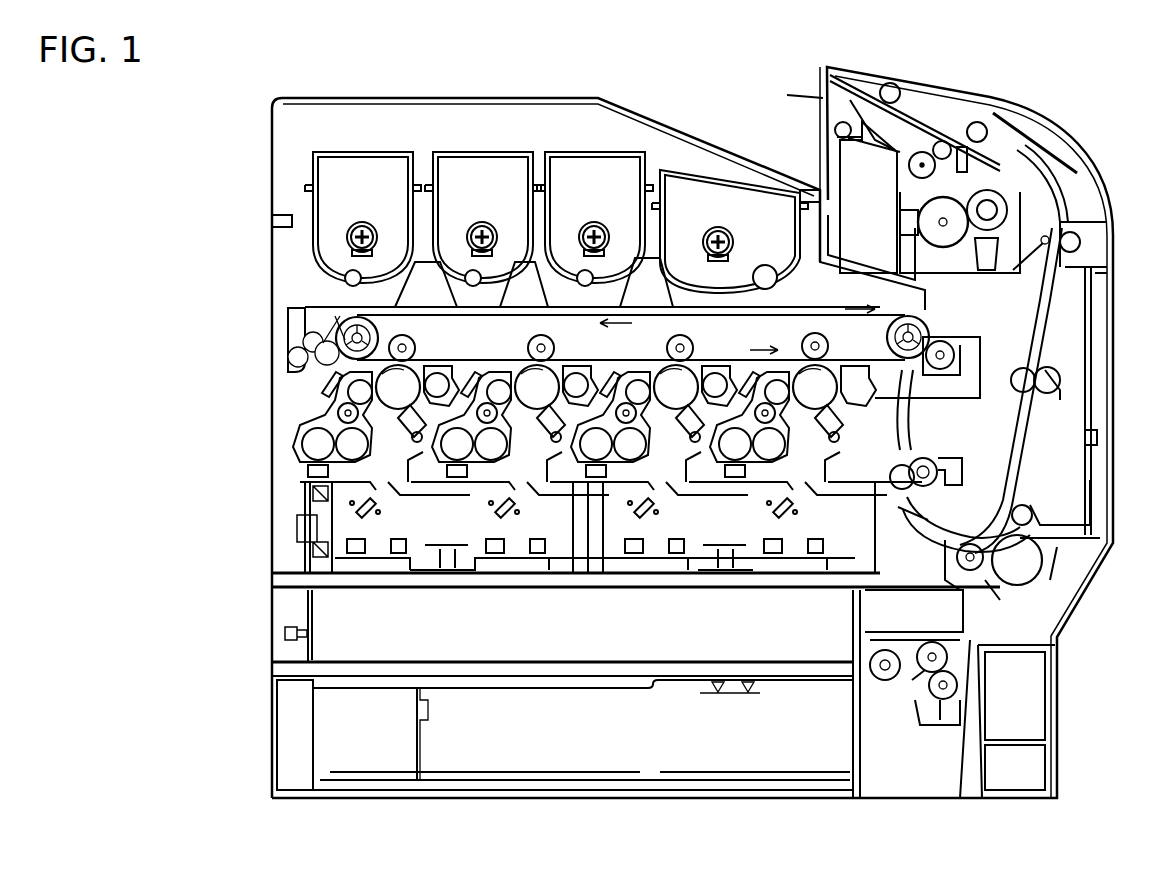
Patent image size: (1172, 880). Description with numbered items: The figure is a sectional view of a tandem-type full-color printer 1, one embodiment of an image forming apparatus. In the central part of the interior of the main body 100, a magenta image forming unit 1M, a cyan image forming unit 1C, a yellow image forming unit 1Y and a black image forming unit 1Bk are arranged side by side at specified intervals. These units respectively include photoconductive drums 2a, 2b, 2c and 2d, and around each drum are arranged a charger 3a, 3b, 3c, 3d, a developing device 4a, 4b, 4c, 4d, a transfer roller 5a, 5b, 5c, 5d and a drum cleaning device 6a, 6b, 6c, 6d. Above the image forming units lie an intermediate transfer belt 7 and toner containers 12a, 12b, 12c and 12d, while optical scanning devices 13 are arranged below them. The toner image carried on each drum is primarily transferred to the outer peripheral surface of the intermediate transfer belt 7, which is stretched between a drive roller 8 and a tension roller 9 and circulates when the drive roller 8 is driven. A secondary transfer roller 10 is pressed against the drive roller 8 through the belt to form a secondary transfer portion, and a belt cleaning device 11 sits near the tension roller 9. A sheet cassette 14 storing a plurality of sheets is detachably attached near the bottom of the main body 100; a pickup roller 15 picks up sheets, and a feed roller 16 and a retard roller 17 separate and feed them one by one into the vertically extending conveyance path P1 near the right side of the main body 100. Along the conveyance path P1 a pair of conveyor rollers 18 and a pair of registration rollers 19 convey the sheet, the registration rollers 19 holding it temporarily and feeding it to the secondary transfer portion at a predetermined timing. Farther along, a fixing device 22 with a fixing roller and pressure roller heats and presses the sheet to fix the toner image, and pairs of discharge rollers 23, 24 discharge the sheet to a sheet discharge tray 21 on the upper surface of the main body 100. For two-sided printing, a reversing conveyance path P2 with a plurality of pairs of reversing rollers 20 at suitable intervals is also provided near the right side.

The full-color printer 1 is at (300, 88).
The main body 100 is at (272, 262).
The magenta image forming unit 1M is at (392, 428).
The cyan image forming unit 1C is at (538, 424).
The yellow image forming unit 1Y is at (677, 445).
The black image forming unit 1Bk is at (816, 443).
The photoconductive drum 2a is at (412, 362).
The photoconductive drum 2b is at (556, 365).
The photoconductive drum 2c is at (690, 365).
The photoconductive drum 2d is at (827, 365).
The charger 3a is at (391, 487).
The charger 3b is at (519, 433).
The charger 3c is at (658, 433).
The charger 3d is at (797, 430).
The developing device 4a is at (322, 416).
The developing device 4b is at (474, 462).
The developing device 4c is at (613, 479).
The developing device 4d is at (752, 460).
The transfer roller 5a is at (406, 334).
The transfer roller 5b is at (539, 319).
The transfer roller 5c is at (663, 341).
The transfer roller 5d is at (798, 338).
The drum cleaning device 6a is at (450, 372).
The drum cleaning device 6b is at (595, 366).
The drum cleaning device 6c is at (731, 360).
The drum cleaning device 6d is at (878, 318).
The intermediate transfer belt 7 is at (808, 306).
The drive roller 8 is at (918, 324).
The tension roller 9 is at (340, 318).
The secondary transfer roller 10 is at (943, 368).
The belt cleaning device 11 is at (290, 350).
The toner container 12a is at (385, 152).
The toner container 12b is at (503, 152).
The toner container 12c is at (600, 140).
The toner container 12d is at (722, 170).
The optical scanning device 13 is at (516, 583).
The sheet cassette 14 is at (735, 765).
The pickup roller 15 is at (884, 682).
The feed roller 16 is at (928, 642).
The retard roller 17 is at (958, 690).
The pair of conveyor rollers 18 is at (945, 565).
The pair of registration rollers 19 is at (948, 468).
The pairs of reversing rollers 20 is at (893, 85).
The sheet discharge tray 21 is at (700, 128).
The fixing device 22 is at (950, 245).
The pair of discharge rollers 23 is at (945, 141).
The pair of discharge rollers 24 is at (836, 127).
The conveyance path P1 is at (908, 445).
The reversing conveyance path P2 is at (1050, 328).